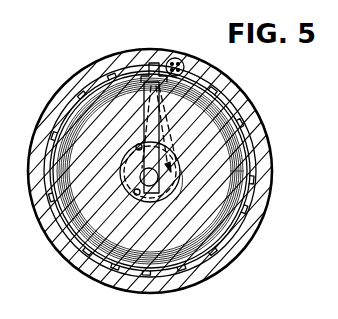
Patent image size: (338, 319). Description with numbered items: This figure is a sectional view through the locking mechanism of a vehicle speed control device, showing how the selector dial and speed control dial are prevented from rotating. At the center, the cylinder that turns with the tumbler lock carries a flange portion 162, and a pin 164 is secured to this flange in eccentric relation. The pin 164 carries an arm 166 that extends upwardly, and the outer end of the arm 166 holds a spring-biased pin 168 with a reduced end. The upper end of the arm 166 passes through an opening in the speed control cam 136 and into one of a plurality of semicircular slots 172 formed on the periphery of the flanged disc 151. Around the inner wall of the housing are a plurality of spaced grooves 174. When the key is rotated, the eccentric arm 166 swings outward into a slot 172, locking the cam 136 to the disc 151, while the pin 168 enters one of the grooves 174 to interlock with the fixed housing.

The speed control cam 136 is at (220, 110).
The flanged disc 151 is at (252, 103).
The flange portion 162 is at (123, 184).
The pin 164 is at (162, 198).
The arm 166 is at (146, 124).
The pin 168 is at (175, 58).
The semicircular slot 172 is at (143, 66).
The spaced grooves 174 is at (105, 58).